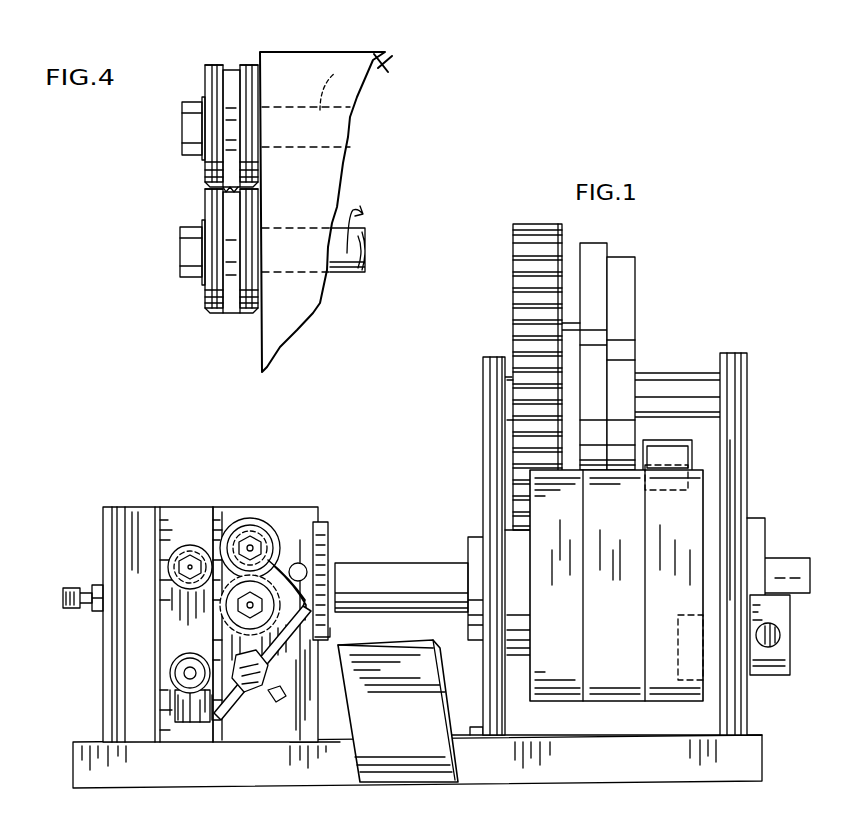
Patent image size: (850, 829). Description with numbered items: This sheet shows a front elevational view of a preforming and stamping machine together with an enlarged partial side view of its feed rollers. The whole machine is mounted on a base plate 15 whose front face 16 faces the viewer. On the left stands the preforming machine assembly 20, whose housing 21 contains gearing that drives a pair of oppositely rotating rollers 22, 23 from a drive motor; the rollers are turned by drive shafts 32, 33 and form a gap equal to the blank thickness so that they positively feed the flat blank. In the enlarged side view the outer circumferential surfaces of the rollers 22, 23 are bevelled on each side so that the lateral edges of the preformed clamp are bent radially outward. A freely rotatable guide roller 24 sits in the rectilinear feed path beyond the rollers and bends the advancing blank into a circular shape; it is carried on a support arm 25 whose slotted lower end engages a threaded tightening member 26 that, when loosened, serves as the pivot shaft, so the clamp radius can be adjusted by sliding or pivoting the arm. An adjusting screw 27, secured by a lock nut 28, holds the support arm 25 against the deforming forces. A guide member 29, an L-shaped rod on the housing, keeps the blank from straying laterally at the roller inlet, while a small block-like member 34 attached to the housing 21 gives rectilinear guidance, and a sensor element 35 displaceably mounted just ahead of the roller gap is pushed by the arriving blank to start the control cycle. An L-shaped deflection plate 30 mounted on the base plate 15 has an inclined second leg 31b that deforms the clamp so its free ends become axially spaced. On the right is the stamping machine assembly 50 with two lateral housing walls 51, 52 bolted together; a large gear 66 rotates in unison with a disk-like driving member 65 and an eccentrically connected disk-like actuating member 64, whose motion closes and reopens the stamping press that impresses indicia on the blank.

In FIG. 1, the base plate 15 is at (779, 782).
In FIG. 1, the front face 16 is at (600, 772).
In FIG. 1, the preforming machine assembly 20 is at (304, 490).
In FIG. 4, the housing 21 is at (370, 64).
In FIG. 1, the housing 21 is at (322, 512).
In FIG. 4, the roller 22 is at (240, 54).
In FIG. 1, the roller 22 is at (248, 518).
In FIG. 4, the roller 23 is at (230, 318).
In FIG. 1, the roller 23 is at (262, 627).
In FIG. 1, the guide roller 24 is at (185, 545).
In FIG. 1, the support arm 25 is at (165, 624).
In FIG. 1, the threaded tightening member 26 is at (170, 675).
In FIG. 1, the adjusting screw 27 is at (70, 588).
In FIG. 1, the lock nut 28 is at (96, 585).
In FIG. 1, the guide member 29 is at (232, 710).
In FIG. 1, the L-shaped deflection plate 30 is at (345, 753).
In FIG. 1, the second leg 31b is at (388, 772).
In FIG. 4, the drive shaft 32 is at (342, 85).
In FIG. 4, the drive shaft 33 is at (362, 270).
In FIG. 1, the block-like member 34 is at (330, 530).
In FIG. 1, the sensor element 35 is at (297, 563).
In FIG. 1, the stamping machine assembly 50 is at (664, 244).
In FIG. 1, the lateral housing wall 51 is at (490, 440).
In FIG. 1, the lateral housing wall 52 is at (748, 450).
In FIG. 1, the disk-like actuating member 64 is at (632, 280).
In FIG. 1, the disk-like driving member 65 is at (594, 250).
In FIG. 1, the gear 66 is at (518, 290).